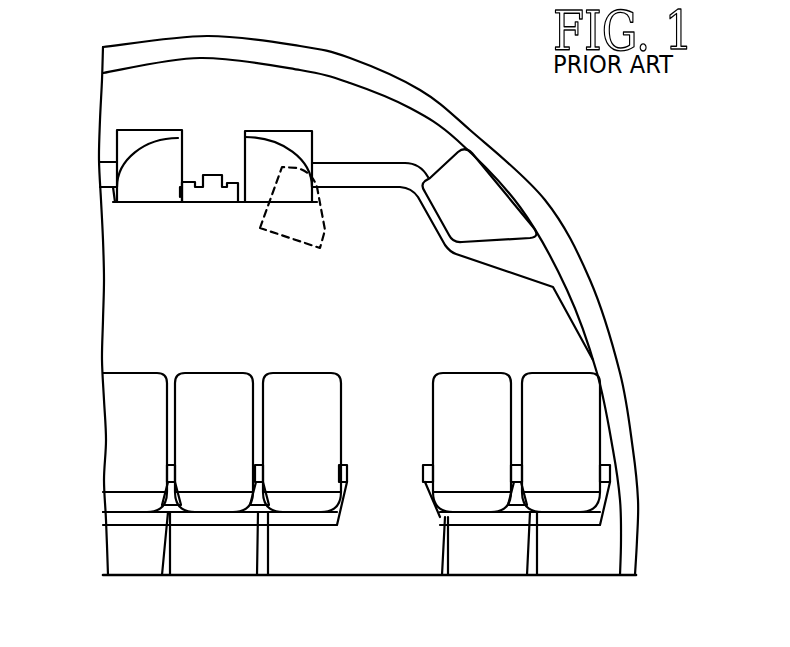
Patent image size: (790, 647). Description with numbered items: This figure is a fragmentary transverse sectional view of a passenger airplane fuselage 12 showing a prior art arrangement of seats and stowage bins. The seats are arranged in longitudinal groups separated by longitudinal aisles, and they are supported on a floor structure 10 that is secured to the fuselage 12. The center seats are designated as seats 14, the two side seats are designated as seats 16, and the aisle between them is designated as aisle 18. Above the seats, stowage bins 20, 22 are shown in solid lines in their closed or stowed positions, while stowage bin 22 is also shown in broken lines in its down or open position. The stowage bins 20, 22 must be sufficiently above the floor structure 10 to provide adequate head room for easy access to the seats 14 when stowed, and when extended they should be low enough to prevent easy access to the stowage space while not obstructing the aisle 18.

The floor structure 10 is at (377, 567).
The fuselage 12 is at (590, 278).
The center seats 14 is at (213, 373).
The side seats 16 is at (470, 372).
The aisle 18 is at (381, 418).
The stowage bin 20 is at (135, 203).
The stowage bin 22 is at (258, 190).